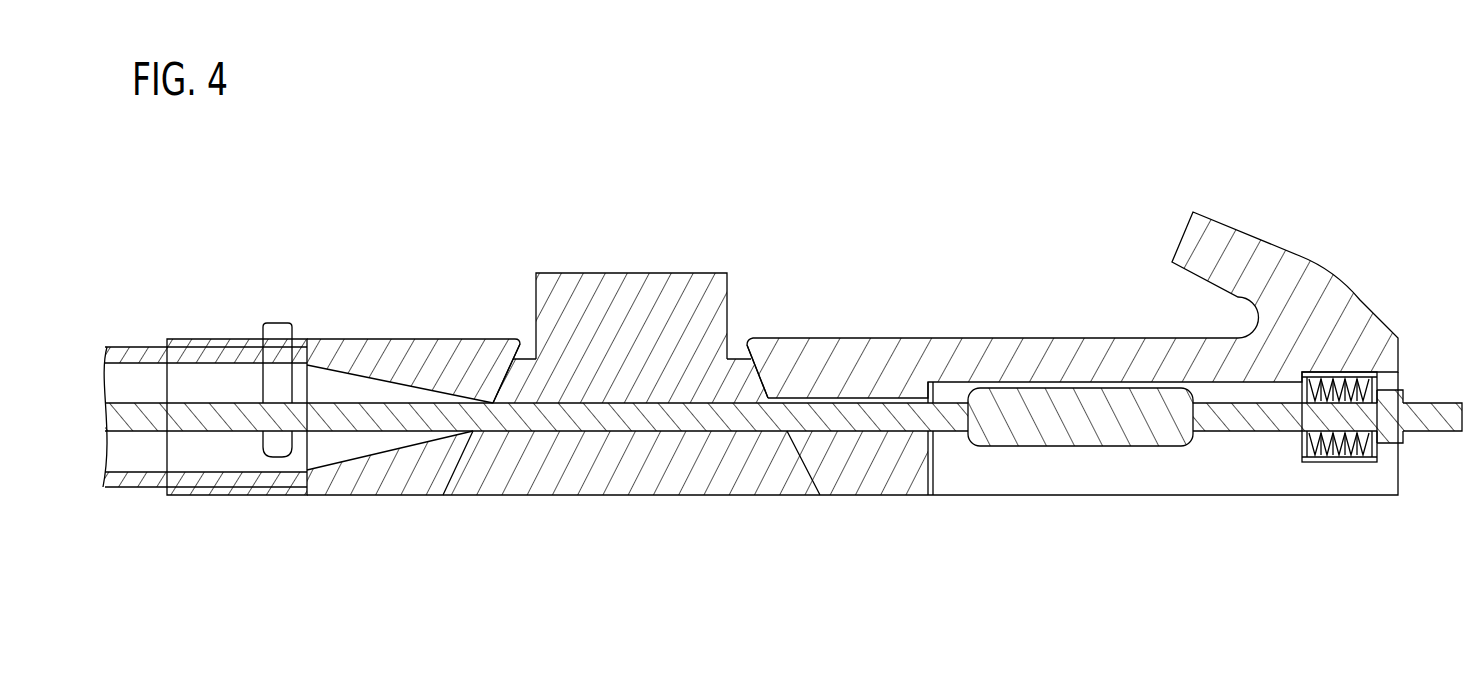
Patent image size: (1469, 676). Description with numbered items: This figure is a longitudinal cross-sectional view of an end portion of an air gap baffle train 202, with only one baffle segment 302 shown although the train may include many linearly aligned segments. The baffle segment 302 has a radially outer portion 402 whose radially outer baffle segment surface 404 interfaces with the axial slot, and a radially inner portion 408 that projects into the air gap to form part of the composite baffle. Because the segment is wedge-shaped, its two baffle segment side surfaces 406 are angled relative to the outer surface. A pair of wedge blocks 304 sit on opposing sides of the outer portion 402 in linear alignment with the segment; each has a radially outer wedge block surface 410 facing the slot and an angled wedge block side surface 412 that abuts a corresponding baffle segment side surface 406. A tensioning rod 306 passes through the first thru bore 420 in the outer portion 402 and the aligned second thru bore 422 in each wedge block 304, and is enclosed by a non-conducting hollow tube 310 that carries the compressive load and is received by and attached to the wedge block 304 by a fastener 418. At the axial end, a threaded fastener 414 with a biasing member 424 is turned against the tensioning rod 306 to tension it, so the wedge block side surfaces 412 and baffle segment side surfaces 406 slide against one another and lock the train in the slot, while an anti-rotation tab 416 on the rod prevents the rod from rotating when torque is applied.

The air gap baffle train 202 is at (583, 132).
The baffle segment 302 is at (626, 258).
The wedge block 304 is at (393, 480).
The tensioning rod 306 is at (619, 415).
The hollow tube 310 is at (137, 482).
The radially outer portion 402 is at (705, 478).
The radially outer baffle segment surface 404 is at (537, 497).
The baffle segment side surface 406 is at (497, 397).
The radially inner portion 408 is at (679, 285).
The radially outer wedge block surface 410 is at (320, 497).
The wedge block side surface 412 is at (505, 382).
The threaded fastener 414 is at (1368, 418).
The anti-rotation tab 416 is at (1075, 408).
The fastener 418 is at (277, 322).
The first thru bore 420 is at (775, 395).
The second thru bore 422 is at (368, 388).
The biasing member 424 is at (1340, 450).